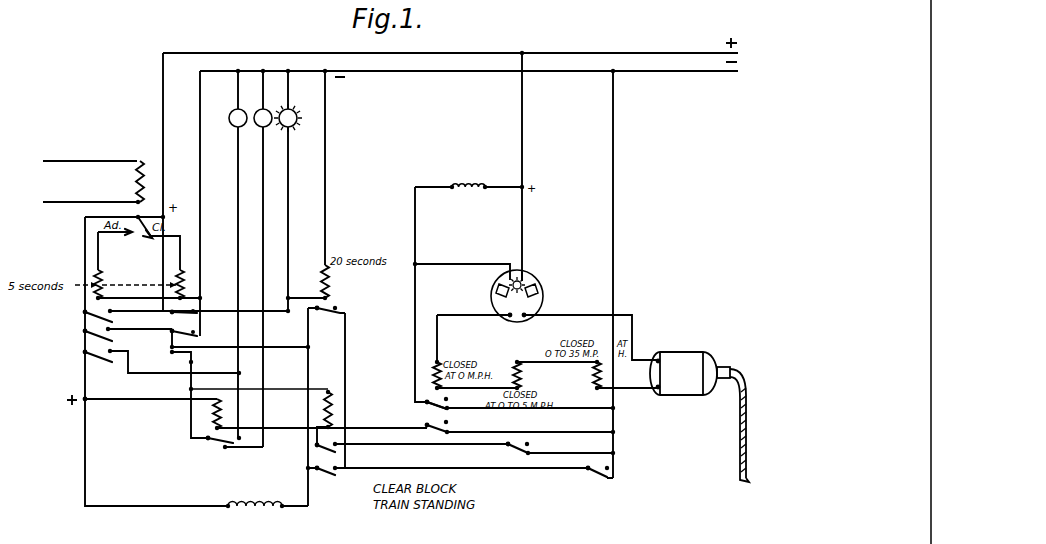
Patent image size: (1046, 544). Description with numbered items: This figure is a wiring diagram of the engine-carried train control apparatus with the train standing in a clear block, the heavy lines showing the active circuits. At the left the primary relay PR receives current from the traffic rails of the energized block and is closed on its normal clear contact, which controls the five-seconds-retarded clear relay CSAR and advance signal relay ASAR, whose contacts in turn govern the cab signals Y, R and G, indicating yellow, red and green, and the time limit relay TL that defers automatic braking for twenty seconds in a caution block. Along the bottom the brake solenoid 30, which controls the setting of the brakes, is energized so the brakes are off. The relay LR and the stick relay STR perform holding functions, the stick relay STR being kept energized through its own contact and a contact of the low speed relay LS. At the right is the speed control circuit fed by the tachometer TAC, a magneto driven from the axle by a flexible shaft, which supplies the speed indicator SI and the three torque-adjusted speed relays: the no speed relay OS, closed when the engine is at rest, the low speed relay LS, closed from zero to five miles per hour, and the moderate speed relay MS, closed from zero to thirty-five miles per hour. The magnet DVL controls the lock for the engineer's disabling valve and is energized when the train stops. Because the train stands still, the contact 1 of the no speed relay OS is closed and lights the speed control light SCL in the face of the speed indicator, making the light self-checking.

The primary relay PR is at (93, 181).
The advance signal relay ASAR is at (106, 274).
The clear or normal relay CSAR is at (185, 274).
The time limit relay TL is at (334, 281).
The relay LR is at (207, 413).
The stick relay STR is at (323, 400).
The no speed relay OS is at (433, 364).
The low speed relay LS is at (510, 364).
The moderate speed relay MS is at (583, 375).
The disabling valve lock magnet DVL is at (466, 177).
The brake solenoid 30 is at (255, 518).
The yellow cab signal Y is at (238, 118).
The red cab signal R is at (263, 118).
The green cab signal G is at (288, 118).
The speed control light SCL is at (527, 293).
The speed indicator SI is at (535, 290).
The tachometer TAC is at (699, 409).
The contact of the no speed relay 1 is at (437, 412).